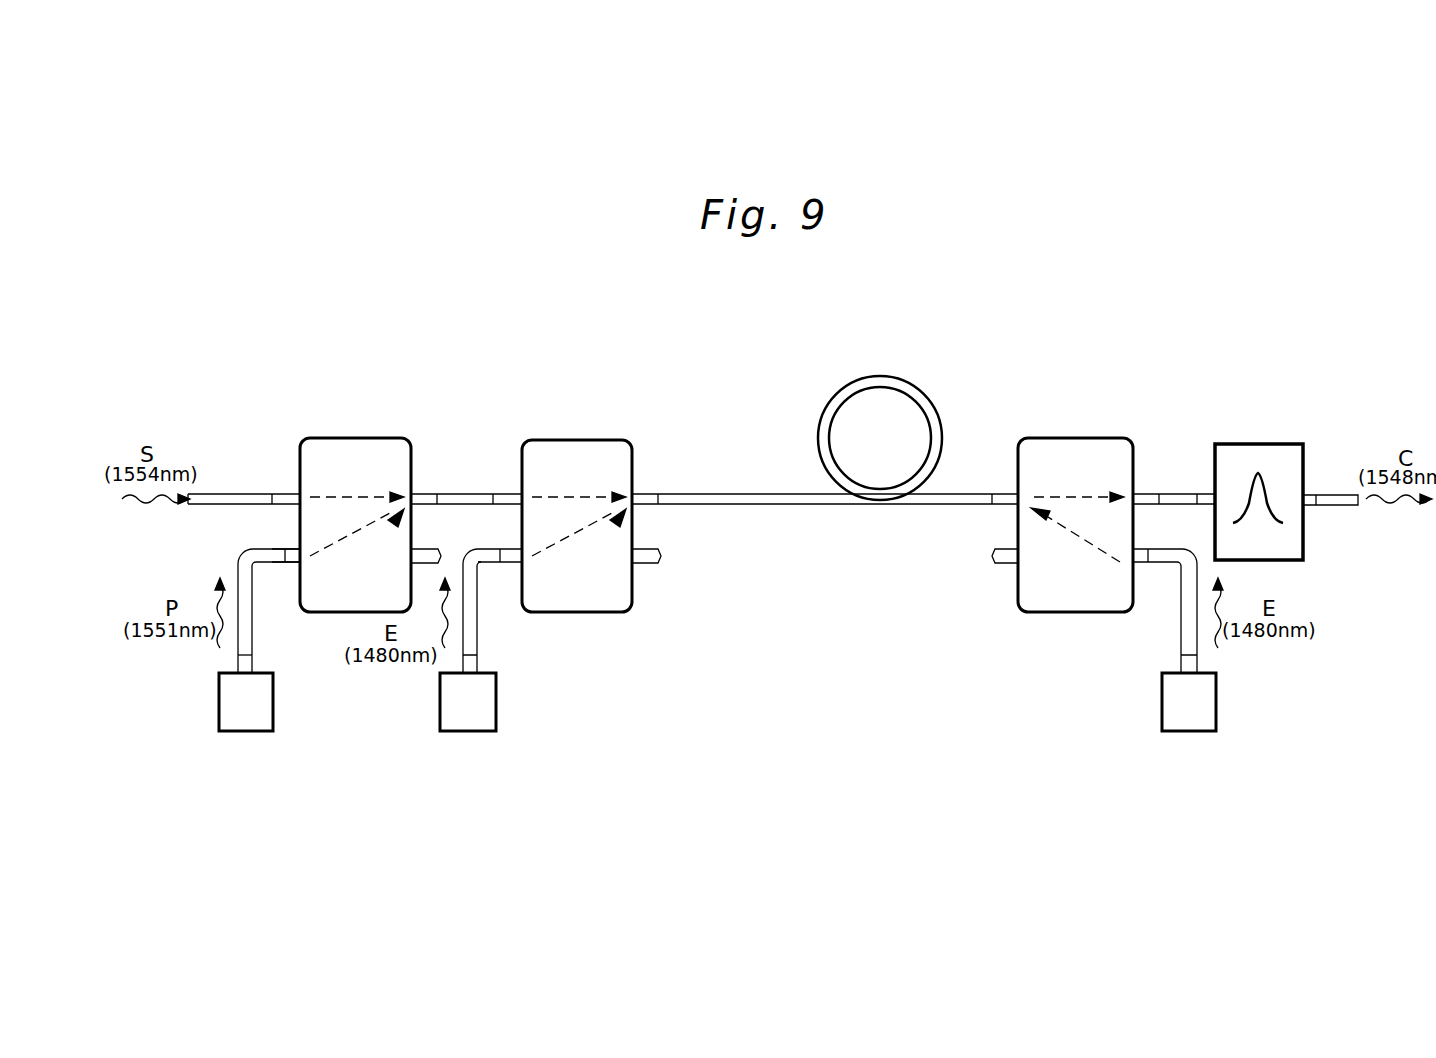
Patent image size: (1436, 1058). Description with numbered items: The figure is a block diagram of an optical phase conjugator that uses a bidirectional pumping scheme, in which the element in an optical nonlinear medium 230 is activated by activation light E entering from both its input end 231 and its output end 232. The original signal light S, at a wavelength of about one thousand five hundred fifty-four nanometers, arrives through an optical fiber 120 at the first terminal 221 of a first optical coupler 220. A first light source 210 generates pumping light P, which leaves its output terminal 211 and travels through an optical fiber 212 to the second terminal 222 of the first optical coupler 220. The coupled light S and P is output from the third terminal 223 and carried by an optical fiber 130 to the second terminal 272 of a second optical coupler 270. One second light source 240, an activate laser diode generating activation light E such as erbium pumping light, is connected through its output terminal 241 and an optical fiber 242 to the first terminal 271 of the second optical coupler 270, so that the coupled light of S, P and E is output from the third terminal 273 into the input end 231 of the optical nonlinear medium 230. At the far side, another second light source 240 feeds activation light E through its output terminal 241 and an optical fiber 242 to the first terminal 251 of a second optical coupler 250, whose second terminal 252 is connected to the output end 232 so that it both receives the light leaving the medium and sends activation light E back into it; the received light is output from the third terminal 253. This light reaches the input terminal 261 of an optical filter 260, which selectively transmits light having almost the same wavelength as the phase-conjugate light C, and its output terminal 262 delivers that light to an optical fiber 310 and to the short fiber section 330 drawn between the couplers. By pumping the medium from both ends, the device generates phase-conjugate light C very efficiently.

The optical fiber 120 is at (230, 490).
The optical fiber 130 is at (462, 494).
The first light source 210 is at (258, 714).
The output terminal 211 is at (252, 664).
The optical fiber 212 is at (248, 634).
The first optical coupler 220 is at (370, 448).
The first terminal 221 is at (282, 492).
The second terminal 222 is at (286, 556).
The third terminal 223 is at (432, 492).
The optical nonlinear medium 230 is at (923, 412).
The input end 231 is at (680, 504).
The output end 232 is at (974, 498).
The second light source 240 is at (482, 712).
The output terminal 241 is at (484, 664).
The optical fiber 242 is at (469, 628).
The second optical coupler 250 is at (1072, 452).
The first terminal 251 is at (1144, 558).
The second terminal 252 is at (999, 492).
The third terminal 253 is at (1143, 492).
The optical filter 260 is at (1268, 456).
The input terminal 261 is at (1205, 490).
The output terminal 262 is at (1312, 494).
The second optical coupler 270 is at (606, 452).
The first terminal 271 is at (512, 554).
The second terminal 272 is at (508, 491).
The third terminal 273 is at (656, 492).
The optical fiber 310 is at (1338, 506).
The optical fiber 330 is at (1176, 492).